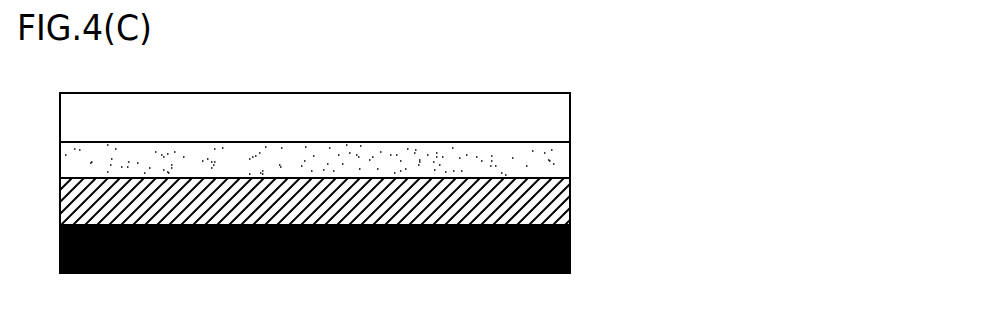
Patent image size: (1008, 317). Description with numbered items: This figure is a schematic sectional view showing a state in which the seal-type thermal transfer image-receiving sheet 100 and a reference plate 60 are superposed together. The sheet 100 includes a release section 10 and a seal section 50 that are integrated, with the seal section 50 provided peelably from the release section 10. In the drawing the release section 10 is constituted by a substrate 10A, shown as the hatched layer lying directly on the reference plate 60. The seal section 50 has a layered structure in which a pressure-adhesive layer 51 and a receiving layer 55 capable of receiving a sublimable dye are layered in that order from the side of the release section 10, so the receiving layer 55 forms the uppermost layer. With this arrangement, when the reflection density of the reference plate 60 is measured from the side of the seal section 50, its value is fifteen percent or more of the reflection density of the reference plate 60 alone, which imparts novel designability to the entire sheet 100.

The seal-type thermal transfer image-receiving sheet 100 is at (464, 174).
The seal section 50 is at (436, 130).
The receiving layer 55 is at (530, 125).
The pressure-adhesive layer 51 is at (530, 166).
The substrate 10A is at (535, 205).
The release section 10 is at (386, 201).
The reference plate 60 is at (533, 253).